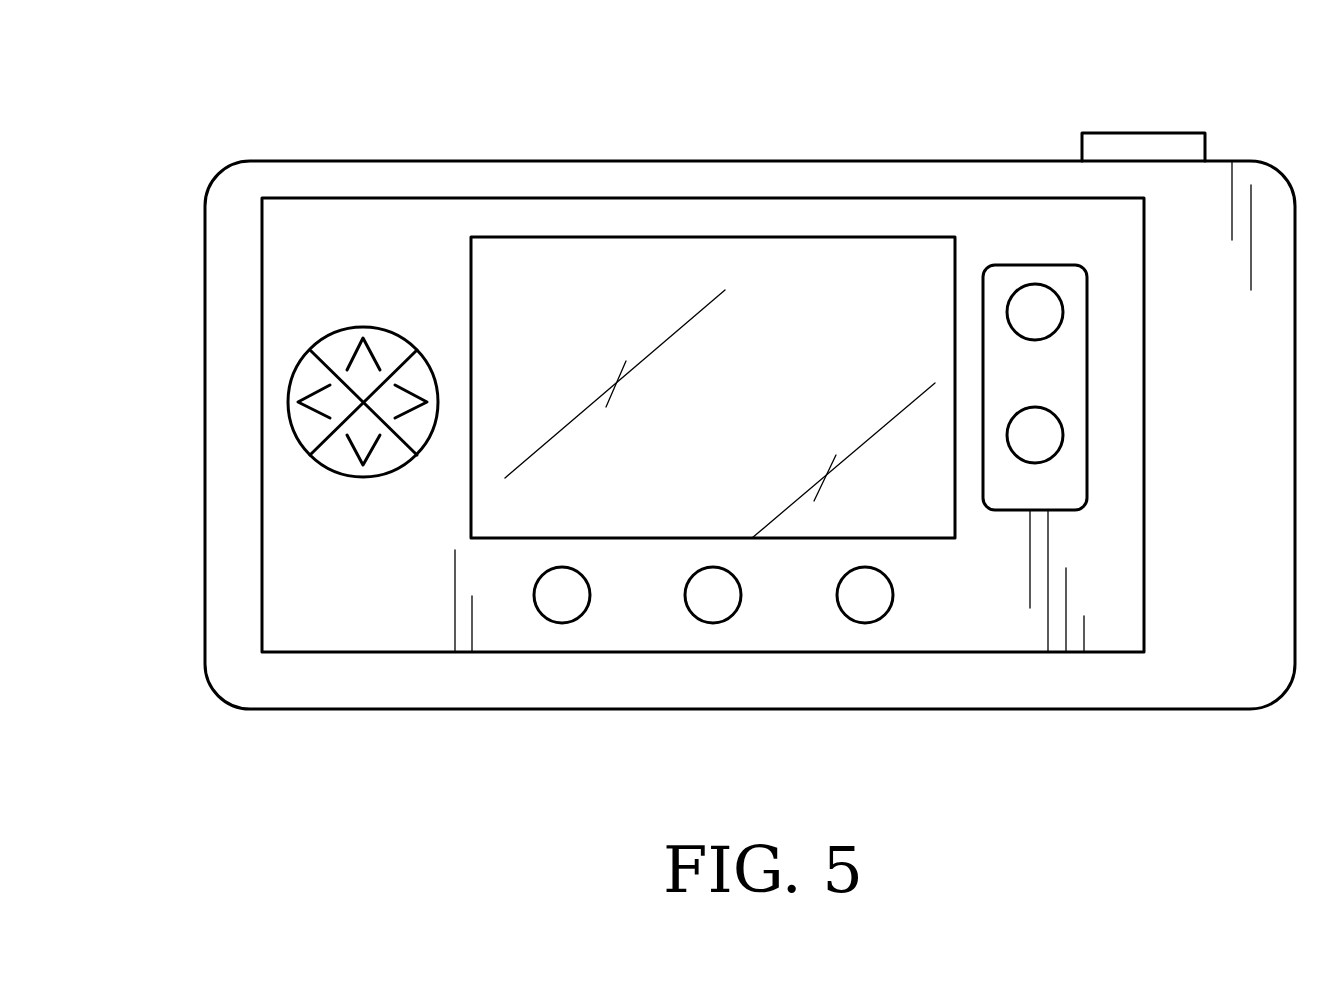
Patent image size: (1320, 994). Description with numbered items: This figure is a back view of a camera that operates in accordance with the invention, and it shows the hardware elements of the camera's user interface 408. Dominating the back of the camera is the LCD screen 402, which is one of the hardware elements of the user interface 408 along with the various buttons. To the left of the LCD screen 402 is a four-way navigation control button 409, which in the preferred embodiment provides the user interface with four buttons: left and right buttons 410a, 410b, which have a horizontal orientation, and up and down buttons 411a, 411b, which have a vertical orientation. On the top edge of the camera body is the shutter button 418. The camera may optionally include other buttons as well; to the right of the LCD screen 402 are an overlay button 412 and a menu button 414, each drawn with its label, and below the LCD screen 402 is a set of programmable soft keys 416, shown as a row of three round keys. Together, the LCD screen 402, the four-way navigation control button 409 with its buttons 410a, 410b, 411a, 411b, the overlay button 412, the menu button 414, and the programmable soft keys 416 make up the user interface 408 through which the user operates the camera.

The user interface 408 is at (770, 83).
The shutter button 418 is at (1137, 133).
The LCD screen 402 is at (752, 402).
The four-way navigation control button 409 is at (269, 406).
The left button 410a is at (305, 432).
The right button 410b is at (382, 396).
The up button 411a is at (388, 340).
The down button 411b is at (390, 463).
The overlay button 412 is at (1065, 312).
The menu button 414 is at (1065, 435).
The programmable soft keys 416 is at (868, 623).